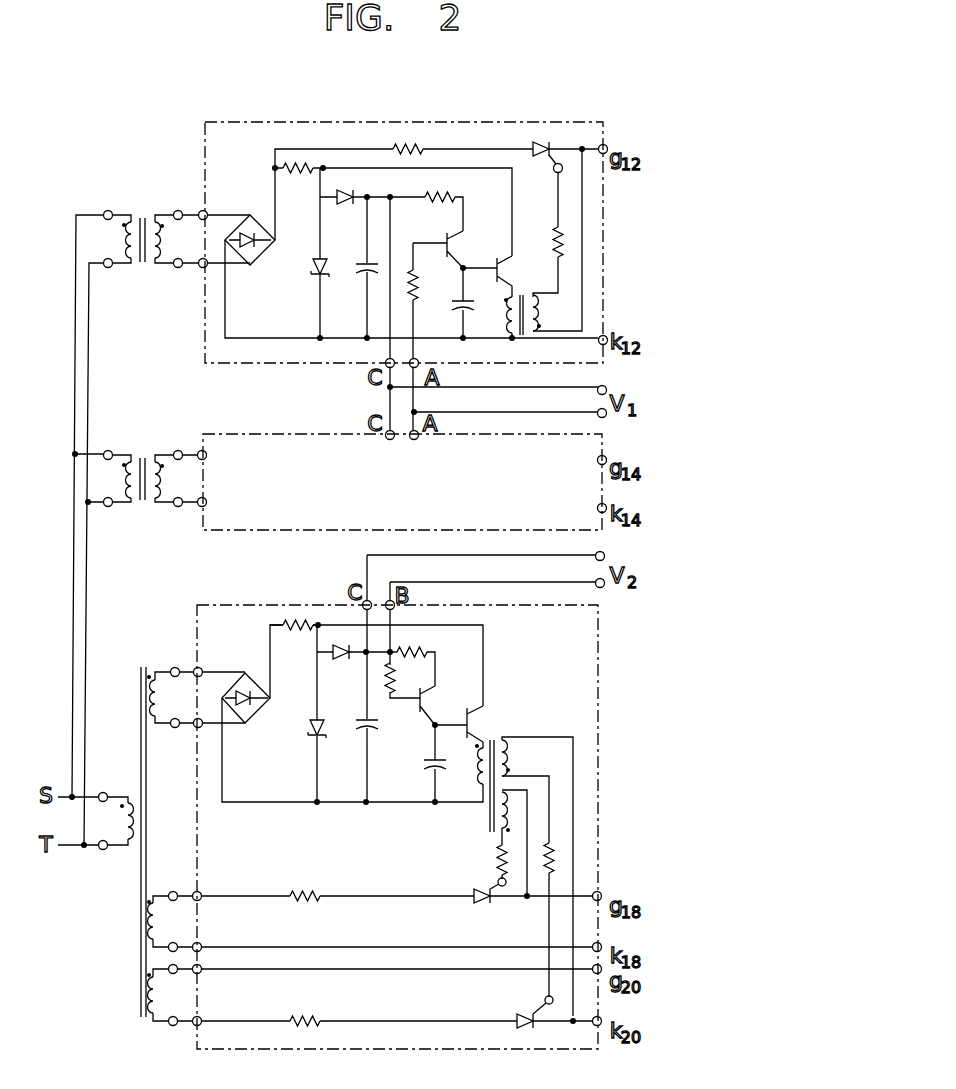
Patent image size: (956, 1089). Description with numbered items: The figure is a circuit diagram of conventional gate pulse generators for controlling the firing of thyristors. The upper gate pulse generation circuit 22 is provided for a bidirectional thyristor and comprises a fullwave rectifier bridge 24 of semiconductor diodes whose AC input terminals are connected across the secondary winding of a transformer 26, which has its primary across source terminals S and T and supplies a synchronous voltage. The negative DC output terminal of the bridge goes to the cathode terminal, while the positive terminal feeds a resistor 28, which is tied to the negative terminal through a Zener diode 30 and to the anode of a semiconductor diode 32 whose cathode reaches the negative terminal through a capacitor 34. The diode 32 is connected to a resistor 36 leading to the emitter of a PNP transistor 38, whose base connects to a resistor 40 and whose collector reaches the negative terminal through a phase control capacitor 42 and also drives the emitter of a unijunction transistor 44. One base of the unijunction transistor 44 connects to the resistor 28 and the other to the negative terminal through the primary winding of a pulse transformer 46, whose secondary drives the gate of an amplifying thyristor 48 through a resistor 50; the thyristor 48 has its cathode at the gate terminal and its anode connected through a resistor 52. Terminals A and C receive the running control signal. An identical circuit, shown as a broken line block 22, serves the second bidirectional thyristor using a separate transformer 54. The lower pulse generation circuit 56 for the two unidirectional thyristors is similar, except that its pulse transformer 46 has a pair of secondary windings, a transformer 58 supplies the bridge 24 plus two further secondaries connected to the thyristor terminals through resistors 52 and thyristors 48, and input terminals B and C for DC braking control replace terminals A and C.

The gate pulse generation circuit 22 is at (488, 122).
The fullwave rectifier bridge 24 is at (262, 216).
The transformer 26 is at (146, 213).
The resistor 28 is at (278, 164).
The Zener diode 30 is at (311, 267).
The semiconductor diode 32 is at (344, 205).
The capacitor 34 is at (362, 274).
The resistor 36 is at (455, 197).
The PNP transistor 38 is at (455, 236).
The resistor 40 is at (419, 283).
The phase control capacitor 42 is at (458, 308).
The unijunction transistor 44 is at (494, 280).
The pulse transformer 46 is at (524, 294).
The amplifying thyristor 48 is at (539, 142).
The resistor 50 is at (556, 228).
The resistor 52 is at (398, 142).
The transformer 54 is at (146, 454).
The pulse generation circuit 56 is at (298, 605).
The transformer 58 is at (142, 671).